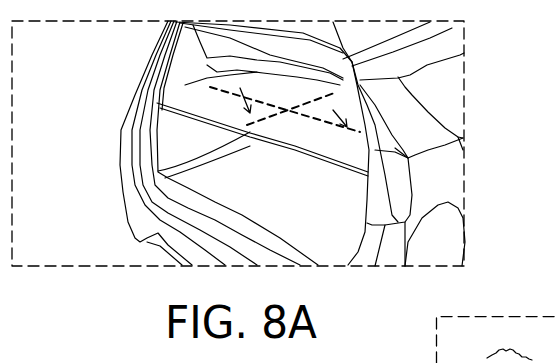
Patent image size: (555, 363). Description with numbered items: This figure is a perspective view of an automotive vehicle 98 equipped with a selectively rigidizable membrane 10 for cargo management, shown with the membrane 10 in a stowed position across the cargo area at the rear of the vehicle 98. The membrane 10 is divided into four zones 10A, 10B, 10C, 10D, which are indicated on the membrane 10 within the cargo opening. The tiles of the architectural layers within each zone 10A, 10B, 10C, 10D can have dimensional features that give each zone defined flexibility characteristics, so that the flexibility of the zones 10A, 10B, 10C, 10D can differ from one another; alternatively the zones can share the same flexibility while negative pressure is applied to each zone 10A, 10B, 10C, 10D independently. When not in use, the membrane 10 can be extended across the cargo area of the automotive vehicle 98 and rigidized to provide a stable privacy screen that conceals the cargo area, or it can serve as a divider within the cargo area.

The selectively rigidizable membrane 10 is at (315, 140).
The first zone 10A is at (205, 102).
The second zone 10B is at (250, 82).
The third zone 10C is at (340, 107).
The fourth zone 10D is at (330, 143).
The automotive vehicle 98 is at (445, 176).